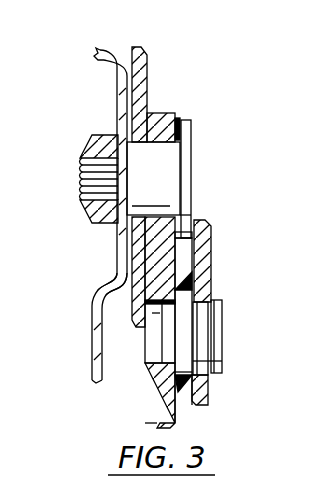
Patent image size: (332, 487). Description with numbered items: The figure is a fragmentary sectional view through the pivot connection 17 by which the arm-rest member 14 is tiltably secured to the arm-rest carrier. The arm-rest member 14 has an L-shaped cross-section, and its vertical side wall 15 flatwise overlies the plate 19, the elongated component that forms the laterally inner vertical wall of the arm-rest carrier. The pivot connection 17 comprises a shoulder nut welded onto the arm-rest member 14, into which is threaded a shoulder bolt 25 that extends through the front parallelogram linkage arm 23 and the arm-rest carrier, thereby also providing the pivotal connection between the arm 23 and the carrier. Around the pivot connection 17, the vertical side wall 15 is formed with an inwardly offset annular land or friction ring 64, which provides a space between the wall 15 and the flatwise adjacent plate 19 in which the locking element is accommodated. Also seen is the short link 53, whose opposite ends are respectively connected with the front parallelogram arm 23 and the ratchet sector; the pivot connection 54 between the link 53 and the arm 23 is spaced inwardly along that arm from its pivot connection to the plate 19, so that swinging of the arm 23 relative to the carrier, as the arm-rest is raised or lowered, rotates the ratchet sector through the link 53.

The arm-rest member 14 is at (113, 50).
The plate 19 is at (150, 75).
The pivot connection 17 is at (103, 135).
The shoulder bolt 25 is at (172, 163).
The link 53 is at (205, 262).
The pivot connection 54 is at (222, 335).
The friction ring 64 is at (118, 285).
The vertical side wall 15 is at (90, 333).
The parallelogram linkage arm 23 is at (170, 418).